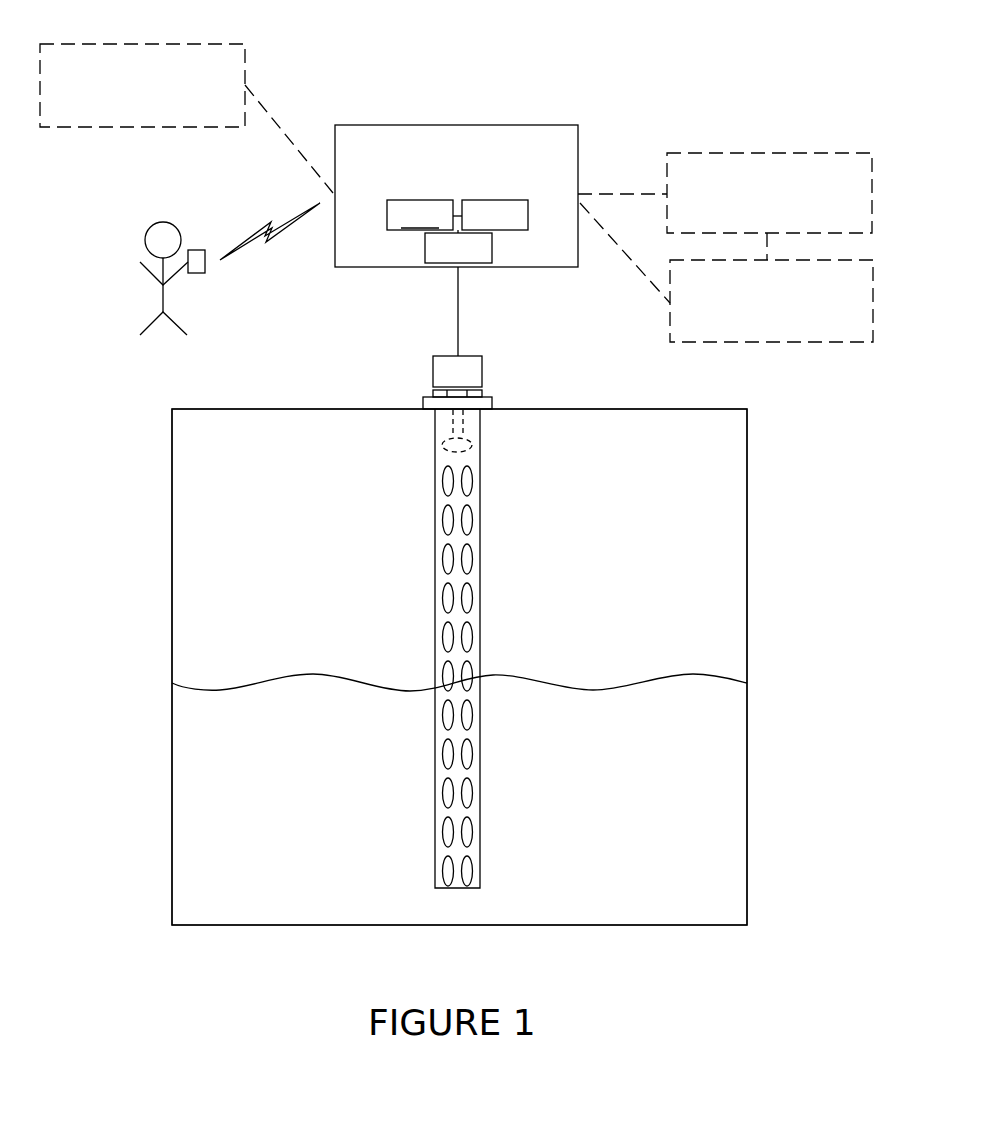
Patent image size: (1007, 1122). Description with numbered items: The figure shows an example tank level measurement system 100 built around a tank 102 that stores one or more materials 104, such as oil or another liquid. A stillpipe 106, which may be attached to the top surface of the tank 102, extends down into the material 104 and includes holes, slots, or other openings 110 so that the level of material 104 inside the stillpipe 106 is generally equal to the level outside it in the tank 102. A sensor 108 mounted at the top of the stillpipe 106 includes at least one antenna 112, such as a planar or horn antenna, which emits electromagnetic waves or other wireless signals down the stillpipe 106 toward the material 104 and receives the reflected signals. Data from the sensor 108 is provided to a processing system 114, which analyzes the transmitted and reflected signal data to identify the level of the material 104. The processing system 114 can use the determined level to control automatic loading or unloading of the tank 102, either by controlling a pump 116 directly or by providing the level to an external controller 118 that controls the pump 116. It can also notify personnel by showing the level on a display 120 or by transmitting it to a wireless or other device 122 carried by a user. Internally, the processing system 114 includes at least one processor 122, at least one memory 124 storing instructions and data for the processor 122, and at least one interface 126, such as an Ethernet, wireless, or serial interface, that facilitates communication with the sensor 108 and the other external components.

The tank level measurement system 100 is at (818, 945).
The tank 102 is at (750, 532).
The material 104 is at (728, 768).
The stillpipe 106 is at (483, 542).
The sensor 108 is at (492, 378).
The openings 110 is at (470, 638).
The antenna 112 is at (473, 453).
The processing system 114 is at (456, 196).
The pump 116 is at (748, 344).
The external controller 118 is at (712, 152).
The display 120 is at (164, 42).
The wireless device / processor 122 is at (193, 248).
The memory 124 is at (476, 228).
The interface 126 is at (439, 261).